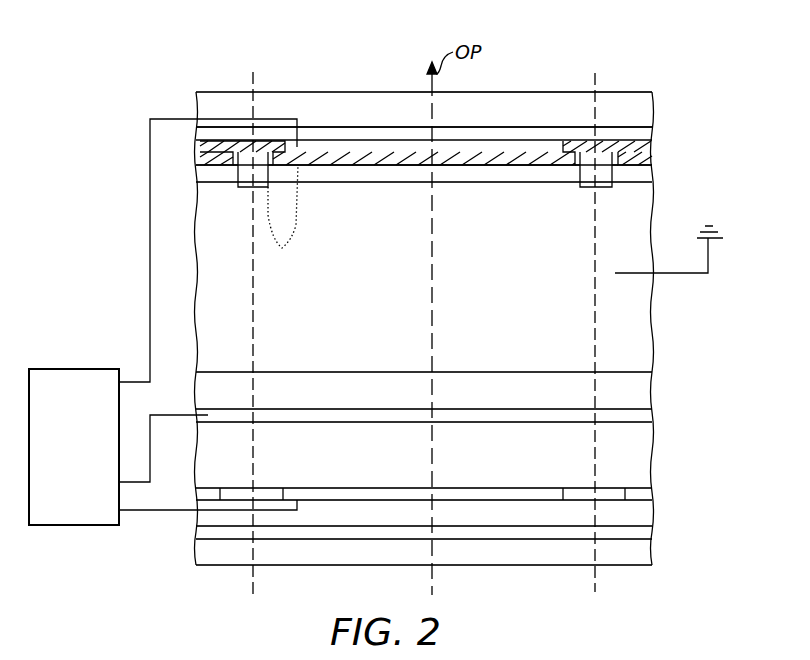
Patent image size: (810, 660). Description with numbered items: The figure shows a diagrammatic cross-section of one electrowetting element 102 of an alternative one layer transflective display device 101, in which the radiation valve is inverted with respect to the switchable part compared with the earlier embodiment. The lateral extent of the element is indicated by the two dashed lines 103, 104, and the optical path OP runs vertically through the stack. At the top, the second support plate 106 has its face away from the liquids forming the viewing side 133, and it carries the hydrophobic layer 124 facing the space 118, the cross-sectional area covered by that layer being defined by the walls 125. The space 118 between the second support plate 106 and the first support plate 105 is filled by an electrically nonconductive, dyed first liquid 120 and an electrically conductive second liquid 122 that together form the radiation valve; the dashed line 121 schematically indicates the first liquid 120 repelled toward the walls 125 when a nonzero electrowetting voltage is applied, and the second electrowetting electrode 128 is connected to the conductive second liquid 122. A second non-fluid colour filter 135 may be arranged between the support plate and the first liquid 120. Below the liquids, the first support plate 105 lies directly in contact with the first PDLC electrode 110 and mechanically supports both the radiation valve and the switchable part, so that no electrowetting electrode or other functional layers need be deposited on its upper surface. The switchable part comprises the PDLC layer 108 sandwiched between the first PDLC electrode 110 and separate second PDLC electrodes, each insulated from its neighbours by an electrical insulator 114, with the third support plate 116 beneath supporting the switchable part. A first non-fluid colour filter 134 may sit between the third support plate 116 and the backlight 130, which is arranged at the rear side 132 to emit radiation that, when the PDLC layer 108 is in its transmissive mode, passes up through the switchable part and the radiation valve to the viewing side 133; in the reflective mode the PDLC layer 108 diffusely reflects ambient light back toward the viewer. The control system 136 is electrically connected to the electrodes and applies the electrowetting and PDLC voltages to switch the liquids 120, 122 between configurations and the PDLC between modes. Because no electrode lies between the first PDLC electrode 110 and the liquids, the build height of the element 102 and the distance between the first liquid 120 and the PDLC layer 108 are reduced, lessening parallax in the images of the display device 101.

The display device 101 is at (697, 80).
The electrowetting element 102 is at (360, 84).
The dashed line 103 is at (255, 77).
The dashed line 104 is at (595, 73).
The first support plate 105 is at (645, 390).
The second support plate 106 is at (640, 110).
The PDLC layer 108 is at (645, 455).
The first PDLC electrode 110 is at (645, 415).
The electrical insulator 114 is at (582, 493).
The third support plate 116 is at (645, 511).
The space 118 is at (480, 193).
The first liquid 120 is at (560, 170).
The dashed line 121 is at (293, 233).
The second liquid 122 is at (643, 323).
The hydrophobic layer 124 is at (393, 165).
The walls 125 is at (245, 182).
The second electrowetting electrode 128 is at (708, 260).
The backlight 130 is at (645, 555).
The rear side 132 is at (532, 566).
The viewing side 133 is at (542, 92).
The first non-fluid colour filter 134 is at (207, 531).
The second non-fluid colour filter 135 is at (640, 138).
The control system 136 is at (163, 322).